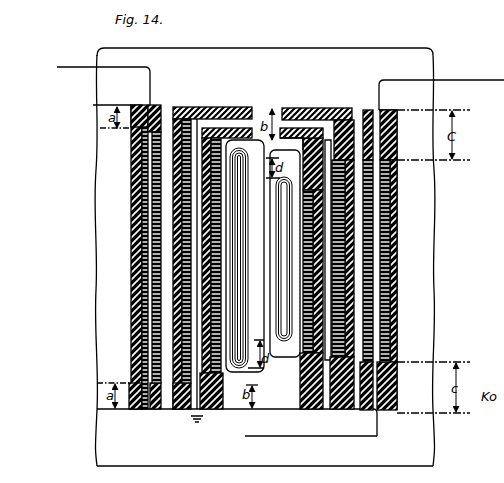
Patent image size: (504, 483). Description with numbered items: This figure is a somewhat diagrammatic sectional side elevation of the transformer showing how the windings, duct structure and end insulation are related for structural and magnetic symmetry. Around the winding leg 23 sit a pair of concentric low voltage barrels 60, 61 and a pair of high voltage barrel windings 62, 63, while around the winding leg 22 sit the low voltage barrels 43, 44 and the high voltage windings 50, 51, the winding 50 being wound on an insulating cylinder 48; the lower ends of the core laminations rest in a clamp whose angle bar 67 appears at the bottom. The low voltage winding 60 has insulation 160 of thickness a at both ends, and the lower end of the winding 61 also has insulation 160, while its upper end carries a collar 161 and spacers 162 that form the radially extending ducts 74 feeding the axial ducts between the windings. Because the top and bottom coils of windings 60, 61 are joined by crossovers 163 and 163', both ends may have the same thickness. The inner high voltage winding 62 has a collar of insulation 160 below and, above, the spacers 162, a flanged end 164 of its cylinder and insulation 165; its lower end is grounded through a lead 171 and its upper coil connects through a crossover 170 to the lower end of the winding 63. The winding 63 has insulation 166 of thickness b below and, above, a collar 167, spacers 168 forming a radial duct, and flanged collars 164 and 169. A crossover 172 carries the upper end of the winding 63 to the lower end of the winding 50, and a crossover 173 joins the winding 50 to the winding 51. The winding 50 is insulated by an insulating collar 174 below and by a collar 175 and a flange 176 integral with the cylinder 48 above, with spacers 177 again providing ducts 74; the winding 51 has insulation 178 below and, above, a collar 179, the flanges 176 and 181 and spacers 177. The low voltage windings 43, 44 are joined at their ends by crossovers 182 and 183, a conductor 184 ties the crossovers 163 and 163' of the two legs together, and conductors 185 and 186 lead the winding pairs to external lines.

The winding leg 22 is at (422, 195).
The winding leg 23 is at (97, 261).
The low voltage winding barrel 43 is at (375, 283).
The low voltage winding barrel 44 is at (382, 310).
The insulating cylinder 48 is at (340, 249).
The inner high voltage winding 50 is at (264, 262).
The outer high voltage winding 51 is at (312, 292).
The low voltage winding 60 is at (148, 204).
The low voltage winding 61 is at (188, 250).
The inner high voltage winding 62 is at (178, 262).
The outer high voltage winding 63 is at (217, 335).
The angle bar 67 is at (433, 459).
The radially extending duct 74 is at (258, 112).
The insulation 160 is at (143, 106).
The collar 161 is at (149, 106).
The spacers 162 is at (158, 118).
The crossover 163 is at (121, 257).
The crossover 163' is at (121, 383).
The flanged end 164 is at (190, 107).
The insulation 165 is at (196, 120).
The insulation 166 is at (225, 392).
The collar 167 is at (218, 130).
The spacers 168 is at (229, 128).
The flanged collar 169 is at (289, 127).
The crossover 170 is at (236, 181).
The lead 171 is at (204, 420).
The crossover 172 is at (293, 362).
The crossover 173 is at (281, 343).
The insulating collar 174 is at (341, 409).
The insulating collar 175 is at (345, 118).
The flange 176 is at (292, 118).
The spacers 177 is at (318, 118).
The insulation 178 is at (308, 409).
The collar 179 is at (305, 168).
The flange 181 is at (312, 133).
The crossover 182 is at (386, 171).
The crossover 183 is at (376, 352).
The conductor 184 is at (268, 436).
The conductor 185 is at (470, 80).
The conductor 186 is at (67, 67).